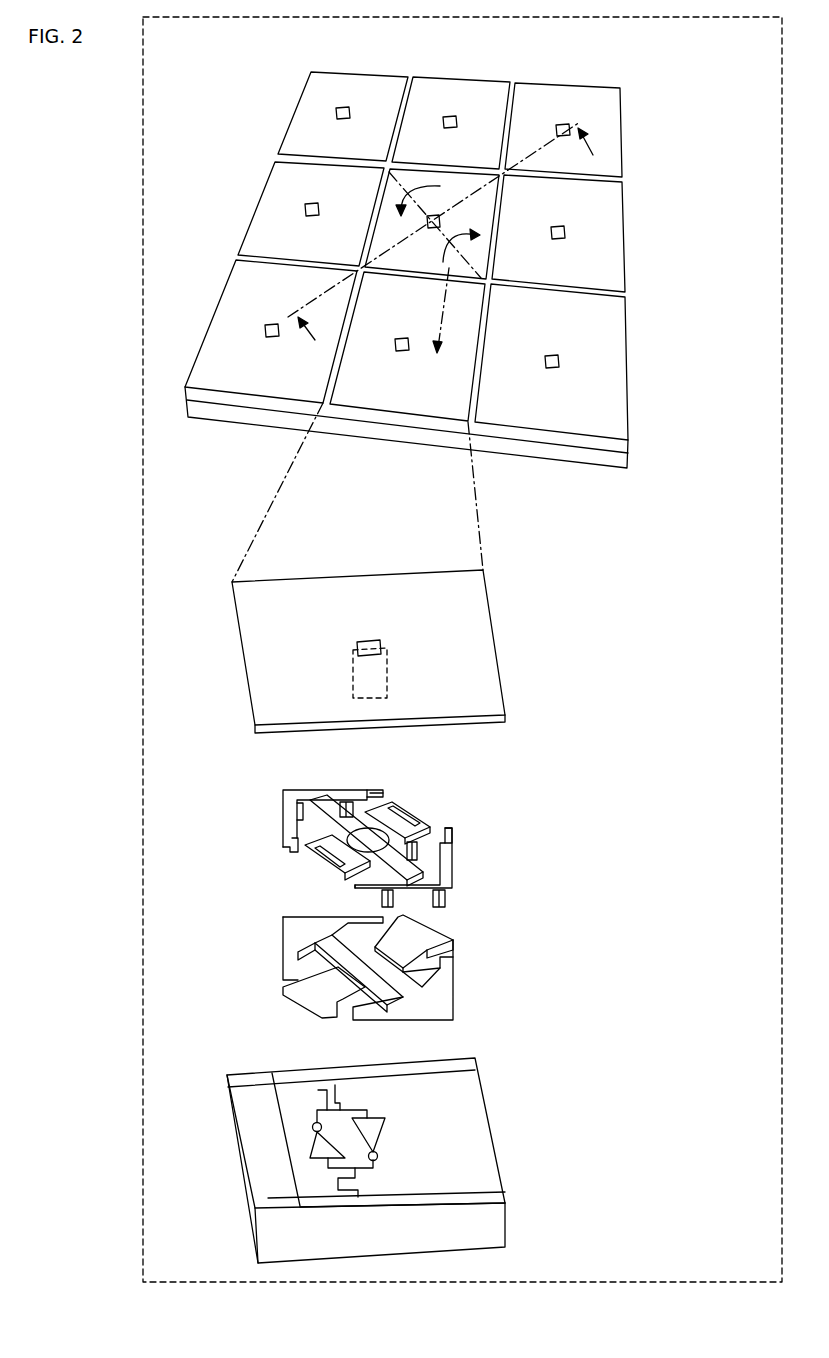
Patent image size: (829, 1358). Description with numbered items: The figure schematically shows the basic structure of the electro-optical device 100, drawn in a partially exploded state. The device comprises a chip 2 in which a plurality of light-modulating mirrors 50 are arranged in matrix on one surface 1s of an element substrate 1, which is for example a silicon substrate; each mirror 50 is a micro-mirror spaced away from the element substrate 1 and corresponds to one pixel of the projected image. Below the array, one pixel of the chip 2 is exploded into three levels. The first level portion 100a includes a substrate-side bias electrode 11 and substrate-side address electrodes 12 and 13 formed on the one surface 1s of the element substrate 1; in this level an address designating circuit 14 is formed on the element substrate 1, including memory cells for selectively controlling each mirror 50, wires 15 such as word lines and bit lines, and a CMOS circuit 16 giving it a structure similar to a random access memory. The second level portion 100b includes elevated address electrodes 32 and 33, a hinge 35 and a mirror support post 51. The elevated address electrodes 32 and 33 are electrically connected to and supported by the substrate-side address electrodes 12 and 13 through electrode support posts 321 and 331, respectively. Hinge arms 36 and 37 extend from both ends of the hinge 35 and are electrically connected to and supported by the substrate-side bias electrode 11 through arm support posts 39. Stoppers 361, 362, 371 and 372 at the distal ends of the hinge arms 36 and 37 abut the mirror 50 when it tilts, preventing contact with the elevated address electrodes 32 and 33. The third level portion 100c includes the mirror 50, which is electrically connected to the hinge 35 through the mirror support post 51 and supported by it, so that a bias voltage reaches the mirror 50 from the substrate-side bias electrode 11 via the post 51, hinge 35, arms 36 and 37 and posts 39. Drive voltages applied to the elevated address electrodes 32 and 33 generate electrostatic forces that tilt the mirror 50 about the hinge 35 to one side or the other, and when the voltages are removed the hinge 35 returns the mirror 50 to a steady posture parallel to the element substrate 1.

The electro-optical device 100 is at (688, 90).
The chip 2 is at (455, 652).
The mirror 50 is at (485, 218).
The mirror support post 51 is at (387, 673).
The element substrate 1 is at (585, 458).
The one surface of the element substrate 1s is at (500, 1197).
The address designating circuit 14 is at (449, 1212).
The wires 15 is at (282, 1205).
The CMOS circuit 16 is at (395, 1127).
The first level portion 100a is at (595, 905).
The second level portion 100b is at (595, 770).
The third level portion 100c is at (595, 592).
The substrate-side bias electrode 11 is at (445, 995).
The substrate-side address electrode 12 is at (300, 992).
The substrate-side address electrode 13 is at (452, 935).
The elevated address electrode 32 is at (315, 862).
The electrode support post 321 is at (355, 887).
The elevated address electrode 33 is at (418, 812).
The electrode support post 331 is at (418, 850).
The hinge 35 is at (323, 812).
The hinge arm 36 is at (446, 850).
The stopper 361 is at (455, 832).
The stopper 362 is at (357, 888).
The hinge arm 37 is at (283, 817).
The stopper 371 is at (375, 793).
The stopper 372 is at (288, 840).
The arm support post 39 is at (393, 904).